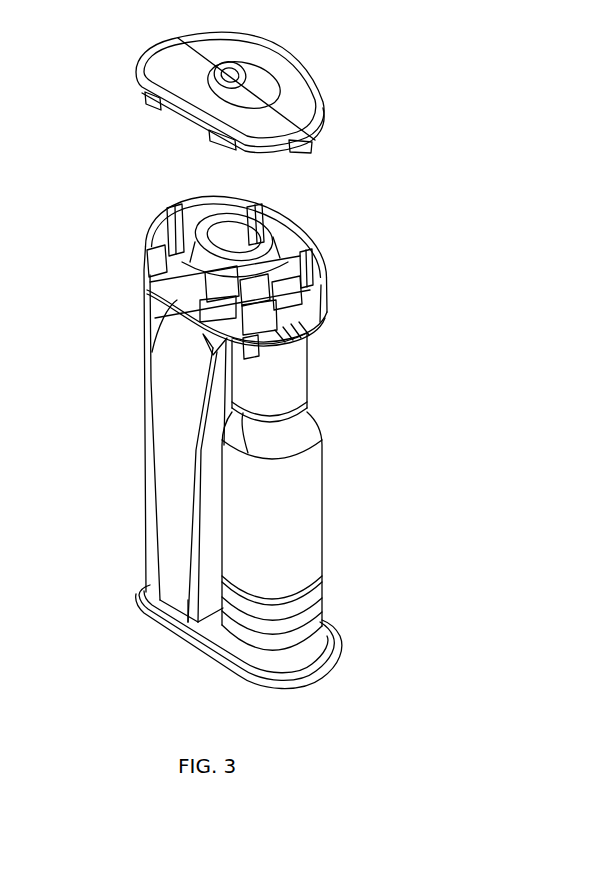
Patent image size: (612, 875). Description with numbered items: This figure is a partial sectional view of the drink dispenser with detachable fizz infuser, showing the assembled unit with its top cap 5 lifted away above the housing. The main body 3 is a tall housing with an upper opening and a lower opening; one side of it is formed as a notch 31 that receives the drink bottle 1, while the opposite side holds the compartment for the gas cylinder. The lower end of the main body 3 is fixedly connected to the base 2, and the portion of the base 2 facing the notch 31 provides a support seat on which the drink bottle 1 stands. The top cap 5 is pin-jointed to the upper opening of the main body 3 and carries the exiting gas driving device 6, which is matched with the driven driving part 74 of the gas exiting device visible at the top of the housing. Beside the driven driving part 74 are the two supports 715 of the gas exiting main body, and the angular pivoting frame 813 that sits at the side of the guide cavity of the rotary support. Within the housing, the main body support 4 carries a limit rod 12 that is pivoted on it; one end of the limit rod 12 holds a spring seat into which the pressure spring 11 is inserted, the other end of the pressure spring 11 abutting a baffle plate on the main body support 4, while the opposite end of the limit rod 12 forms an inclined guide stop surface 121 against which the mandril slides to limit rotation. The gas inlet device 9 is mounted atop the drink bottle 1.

The drink bottle 1 is at (297, 557).
The base 2 is at (317, 663).
The main body 3 is at (177, 500).
The notch of the drink bottle 31 is at (215, 505).
The main body support 4 is at (177, 282).
The top cap 5 is at (224, 44).
The exiting gas driving device 6 is at (229, 74).
The gas inlet device 9 is at (297, 383).
The pressure spring 11 is at (205, 298).
The limit rod 12 is at (208, 305).
The inclined guide stop surface 121 is at (212, 345).
The driven driving part 74 is at (238, 223).
The supports 715 is at (168, 233).
The angular pivoting frame 813 is at (313, 322).